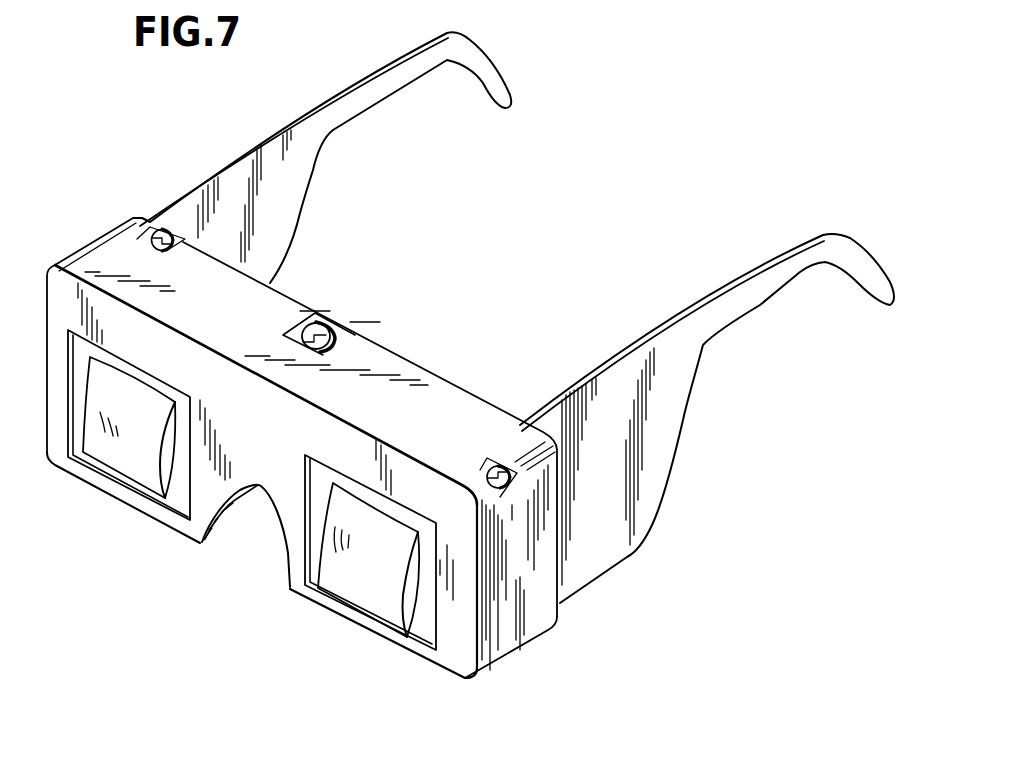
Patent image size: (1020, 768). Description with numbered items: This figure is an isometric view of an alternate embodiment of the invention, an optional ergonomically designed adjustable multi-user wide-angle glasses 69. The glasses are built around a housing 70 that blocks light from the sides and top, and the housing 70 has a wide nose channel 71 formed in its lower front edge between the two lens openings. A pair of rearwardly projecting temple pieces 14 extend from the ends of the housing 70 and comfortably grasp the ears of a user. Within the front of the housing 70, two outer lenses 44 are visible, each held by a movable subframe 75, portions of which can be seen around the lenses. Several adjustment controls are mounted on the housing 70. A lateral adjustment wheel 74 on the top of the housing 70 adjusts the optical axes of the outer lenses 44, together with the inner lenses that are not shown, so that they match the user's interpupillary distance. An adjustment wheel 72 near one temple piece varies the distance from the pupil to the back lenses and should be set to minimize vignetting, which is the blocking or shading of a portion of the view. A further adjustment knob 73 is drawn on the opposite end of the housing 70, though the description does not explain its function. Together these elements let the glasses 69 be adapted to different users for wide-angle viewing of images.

The adjustable multi-user wide-angle glasses 69 is at (591, 193).
The housing 70 is at (510, 643).
The nose channel 71 is at (233, 503).
The adjustment wheel 72 is at (167, 227).
The adjustment knob 73 is at (497, 463).
The lateral adjustment wheel 74 is at (343, 331).
The movable subframe 75 is at (83, 450).
The outer lenses 44 is at (125, 465).
The temple pieces 14 is at (302, 175).